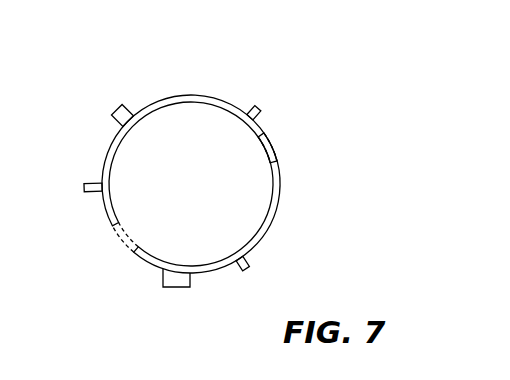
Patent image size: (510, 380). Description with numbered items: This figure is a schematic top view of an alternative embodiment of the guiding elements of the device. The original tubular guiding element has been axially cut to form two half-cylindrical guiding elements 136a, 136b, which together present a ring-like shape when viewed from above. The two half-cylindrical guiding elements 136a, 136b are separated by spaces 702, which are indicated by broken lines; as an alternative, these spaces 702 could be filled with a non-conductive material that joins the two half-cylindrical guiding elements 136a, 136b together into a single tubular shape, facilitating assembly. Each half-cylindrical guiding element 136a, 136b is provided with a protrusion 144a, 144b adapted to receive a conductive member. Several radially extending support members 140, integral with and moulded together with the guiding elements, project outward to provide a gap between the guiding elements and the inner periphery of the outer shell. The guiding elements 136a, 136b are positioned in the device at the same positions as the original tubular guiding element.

The half-cylindrical guiding element 136a is at (187, 95).
The half-cylindrical guiding element 136b is at (273, 214).
The support member 140 is at (262, 104).
The protrusion 144a is at (115, 112).
The protrusion 144b is at (181, 287).
The space 702 is at (273, 144).